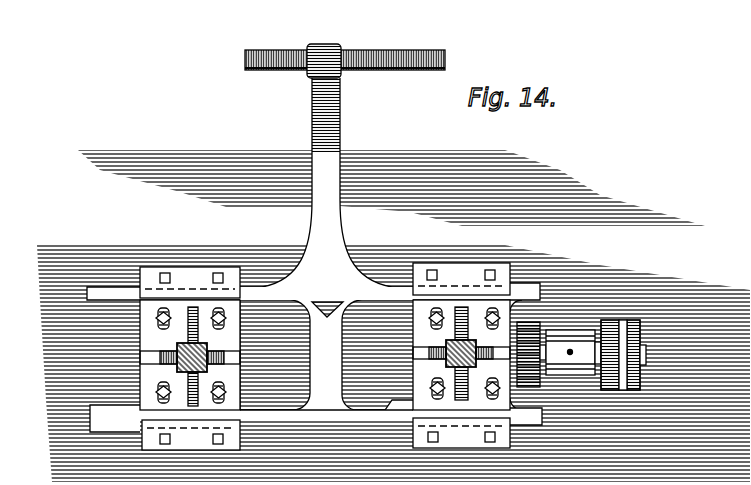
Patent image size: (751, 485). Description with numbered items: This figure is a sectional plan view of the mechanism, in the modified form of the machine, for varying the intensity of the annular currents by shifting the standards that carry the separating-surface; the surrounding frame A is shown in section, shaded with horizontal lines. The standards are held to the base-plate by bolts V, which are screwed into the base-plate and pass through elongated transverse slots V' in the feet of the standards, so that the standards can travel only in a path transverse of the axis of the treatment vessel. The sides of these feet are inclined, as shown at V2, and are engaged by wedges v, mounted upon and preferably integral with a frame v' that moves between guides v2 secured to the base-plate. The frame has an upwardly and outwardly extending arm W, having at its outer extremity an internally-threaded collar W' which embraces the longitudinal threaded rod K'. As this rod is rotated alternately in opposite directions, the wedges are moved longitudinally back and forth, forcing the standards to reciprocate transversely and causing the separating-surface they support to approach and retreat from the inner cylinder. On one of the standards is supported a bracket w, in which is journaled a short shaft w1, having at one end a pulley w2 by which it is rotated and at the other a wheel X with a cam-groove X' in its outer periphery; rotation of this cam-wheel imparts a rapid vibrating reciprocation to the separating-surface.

The frame A is at (393, 316).
The longitudinal threaded rod K' is at (345, 45).
The internally-threaded collar W' is at (320, 46).
The arm W is at (326, 182).
The frame v' is at (313, 353).
The wedge v is at (314, 357).
The guides v2 is at (325, 356).
The inclined sides of the feet V2 is at (152, 306).
The bolts V is at (325, 356).
The elongated transverse slots V' is at (325, 355).
The pulley w2 is at (531, 354).
The short shaft w1 is at (570, 350).
The bracket w is at (583, 364).
The wheel X is at (614, 355).
The cam-groove X' is at (634, 355).